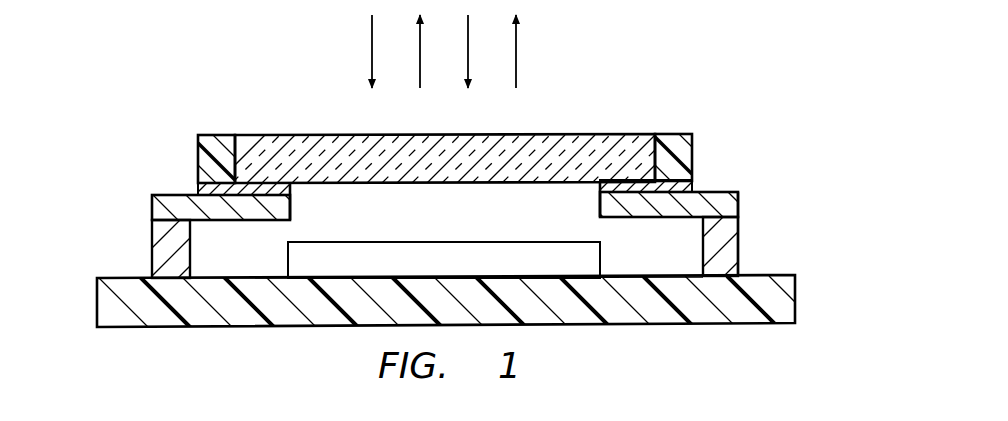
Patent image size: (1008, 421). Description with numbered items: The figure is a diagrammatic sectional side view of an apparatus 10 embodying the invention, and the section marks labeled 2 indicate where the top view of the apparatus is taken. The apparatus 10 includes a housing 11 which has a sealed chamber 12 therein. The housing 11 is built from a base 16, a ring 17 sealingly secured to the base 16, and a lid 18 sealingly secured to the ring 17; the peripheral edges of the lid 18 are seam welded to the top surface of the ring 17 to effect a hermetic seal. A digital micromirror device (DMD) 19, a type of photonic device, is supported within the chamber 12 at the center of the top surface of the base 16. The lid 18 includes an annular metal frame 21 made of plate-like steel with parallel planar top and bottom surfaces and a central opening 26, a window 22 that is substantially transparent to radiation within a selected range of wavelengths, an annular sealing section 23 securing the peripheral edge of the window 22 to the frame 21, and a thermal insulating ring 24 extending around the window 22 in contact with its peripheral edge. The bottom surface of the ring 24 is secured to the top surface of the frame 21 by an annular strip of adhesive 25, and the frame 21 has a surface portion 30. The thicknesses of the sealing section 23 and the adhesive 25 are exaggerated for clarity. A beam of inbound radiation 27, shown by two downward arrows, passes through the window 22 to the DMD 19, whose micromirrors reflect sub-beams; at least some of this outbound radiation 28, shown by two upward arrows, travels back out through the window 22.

The apparatus 10 is at (744, 104).
The housing 11 is at (743, 233).
The sealed chamber 12 is at (668, 258).
The base 16 is at (197, 318).
The ring 17 is at (158, 240).
The lid 18 is at (603, 110).
The digital micromirror device (DMD) 19 is at (445, 242).
The annular metal frame 21 is at (152, 212).
The window 22 is at (332, 135).
The annular sealing section 23 is at (268, 187).
The thermal insulating ring 24 is at (218, 140).
The adhesive 25 is at (200, 187).
The central opening 26 is at (290, 200).
The inbound radiation 27 is at (372, 50).
The outbound radiation 28 is at (516, 50).
The surface portion 30 is at (720, 192).
The section line for FIG. 2 is at (68, 303).